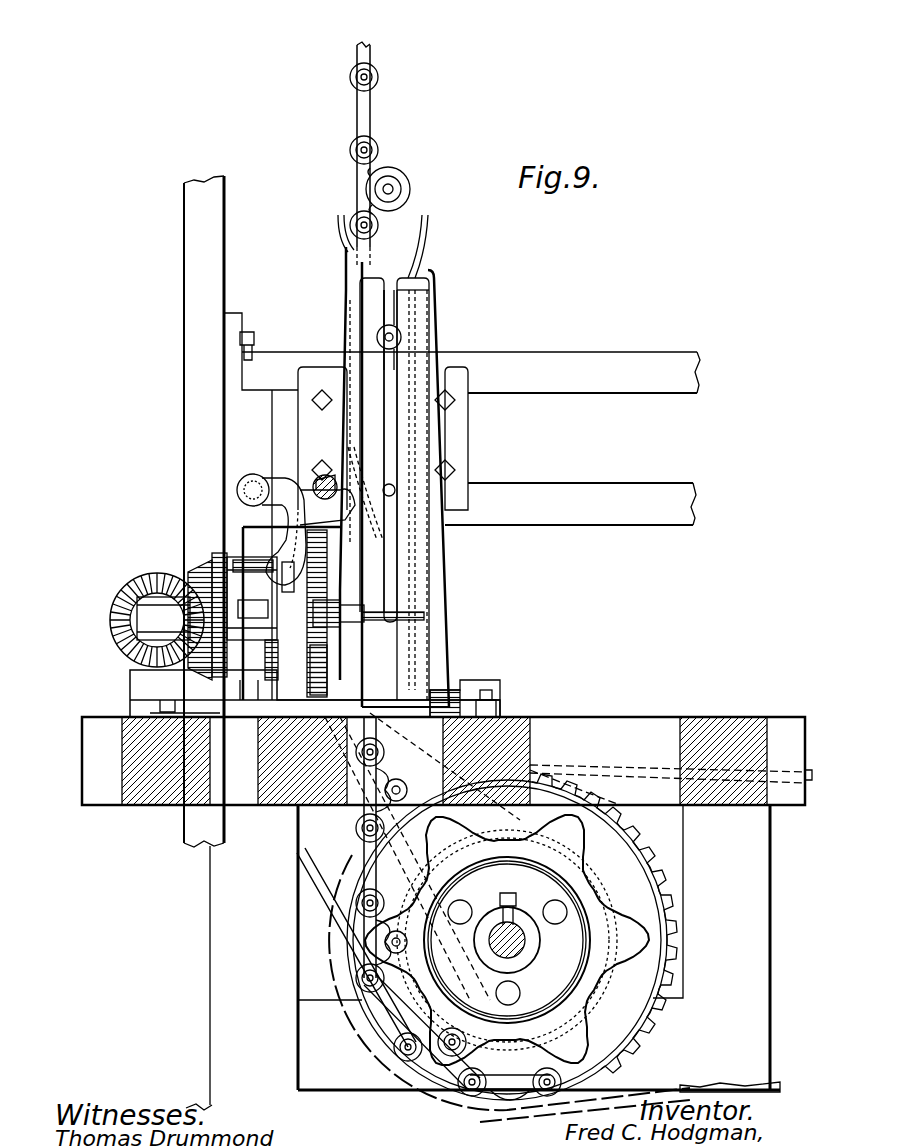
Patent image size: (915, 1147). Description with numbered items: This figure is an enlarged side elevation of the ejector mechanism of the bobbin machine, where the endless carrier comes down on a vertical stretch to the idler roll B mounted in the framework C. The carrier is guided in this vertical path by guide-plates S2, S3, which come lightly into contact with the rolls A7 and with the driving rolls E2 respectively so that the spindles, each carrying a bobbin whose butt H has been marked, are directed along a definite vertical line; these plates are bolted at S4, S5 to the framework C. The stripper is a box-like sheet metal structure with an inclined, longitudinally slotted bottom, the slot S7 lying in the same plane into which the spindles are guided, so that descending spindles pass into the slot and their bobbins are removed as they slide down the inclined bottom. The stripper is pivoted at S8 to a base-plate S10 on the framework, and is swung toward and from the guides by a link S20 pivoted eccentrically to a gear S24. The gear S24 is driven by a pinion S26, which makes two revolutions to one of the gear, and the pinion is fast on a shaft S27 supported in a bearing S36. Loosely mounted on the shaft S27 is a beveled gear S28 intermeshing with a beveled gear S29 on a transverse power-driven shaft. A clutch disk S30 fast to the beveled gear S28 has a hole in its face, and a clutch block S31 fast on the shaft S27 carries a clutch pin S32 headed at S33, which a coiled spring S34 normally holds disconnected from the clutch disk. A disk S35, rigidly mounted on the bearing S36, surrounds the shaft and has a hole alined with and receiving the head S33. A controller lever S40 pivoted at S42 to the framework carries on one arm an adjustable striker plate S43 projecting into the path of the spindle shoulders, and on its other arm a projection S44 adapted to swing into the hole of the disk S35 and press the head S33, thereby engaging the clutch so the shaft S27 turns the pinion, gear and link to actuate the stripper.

The rolls A7 is at (352, 148).
The bobbin butt H is at (392, 185).
The driving roll E2 is at (400, 172).
The guide-plate S2 is at (345, 228).
The guide-plate S3 is at (423, 223).
The slot S7 is at (400, 292).
The bolt S4 is at (325, 395).
The bolt S5 is at (447, 400).
The framework C is at (605, 365).
The controller lever S40 is at (283, 467).
The pivot S42 is at (252, 480).
The adjustable striker plate S43 is at (290, 485).
The projection S44 is at (288, 560).
The head of clutch pin S33 is at (272, 565).
The clutch pin S32 is at (262, 590).
The clutch disk S30 is at (250, 600).
The coiled spring S34 is at (235, 575).
The beveled gear S28 is at (214, 570).
The beveled gear S29 is at (118, 612).
The shaft S27 is at (137, 620).
The clutch block S31 is at (145, 672).
The disk S35 is at (180, 702).
The gear S24 is at (328, 547).
The link S20 is at (342, 612).
The pinion S26 is at (340, 640).
The bearing S36 is at (330, 680).
The pivot S8 is at (470, 690).
The base-plate S10 is at (498, 712).
The idler roll B is at (630, 877).